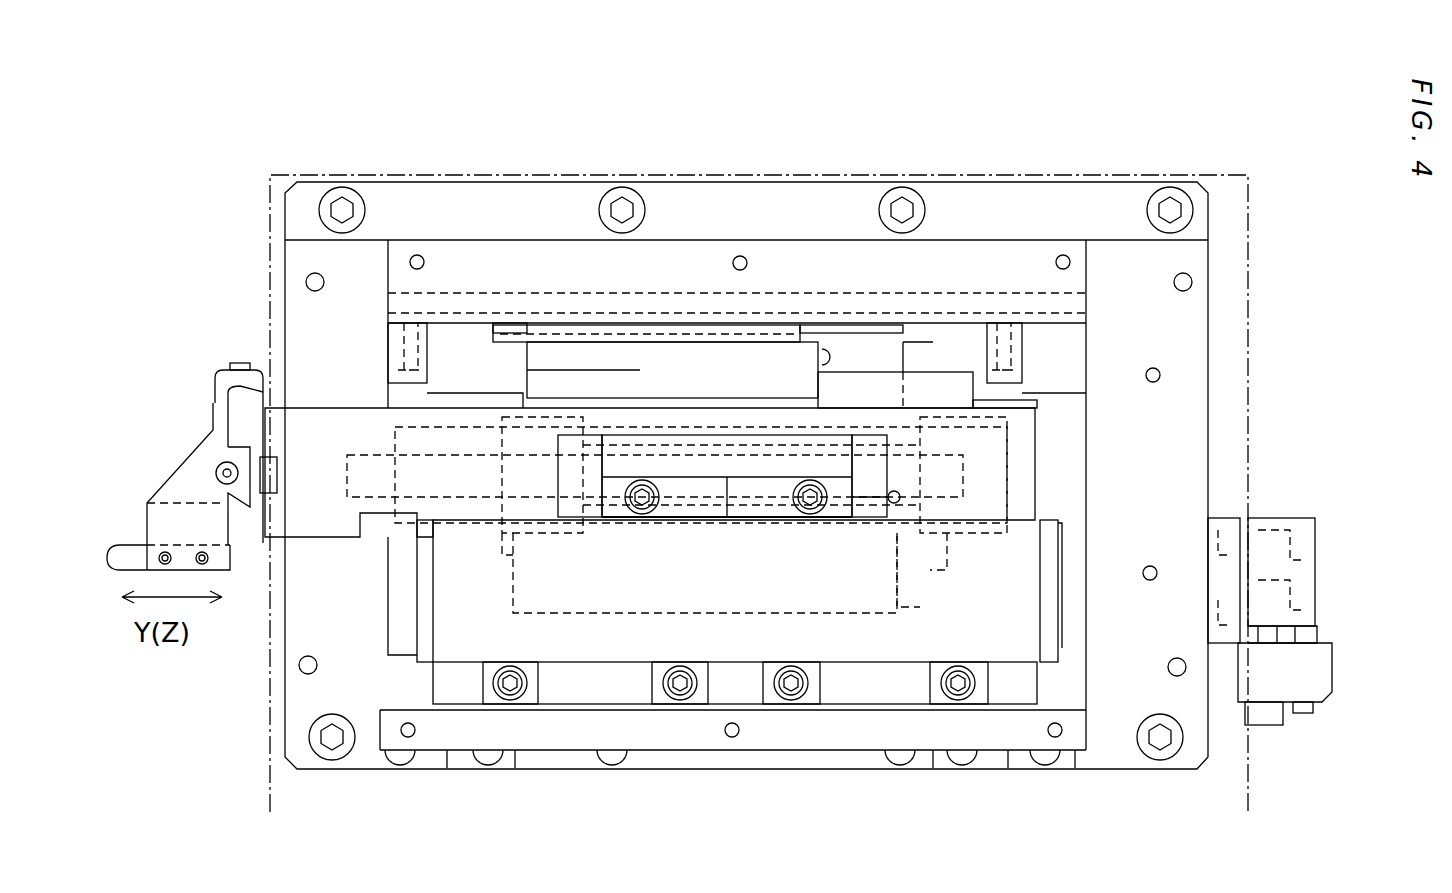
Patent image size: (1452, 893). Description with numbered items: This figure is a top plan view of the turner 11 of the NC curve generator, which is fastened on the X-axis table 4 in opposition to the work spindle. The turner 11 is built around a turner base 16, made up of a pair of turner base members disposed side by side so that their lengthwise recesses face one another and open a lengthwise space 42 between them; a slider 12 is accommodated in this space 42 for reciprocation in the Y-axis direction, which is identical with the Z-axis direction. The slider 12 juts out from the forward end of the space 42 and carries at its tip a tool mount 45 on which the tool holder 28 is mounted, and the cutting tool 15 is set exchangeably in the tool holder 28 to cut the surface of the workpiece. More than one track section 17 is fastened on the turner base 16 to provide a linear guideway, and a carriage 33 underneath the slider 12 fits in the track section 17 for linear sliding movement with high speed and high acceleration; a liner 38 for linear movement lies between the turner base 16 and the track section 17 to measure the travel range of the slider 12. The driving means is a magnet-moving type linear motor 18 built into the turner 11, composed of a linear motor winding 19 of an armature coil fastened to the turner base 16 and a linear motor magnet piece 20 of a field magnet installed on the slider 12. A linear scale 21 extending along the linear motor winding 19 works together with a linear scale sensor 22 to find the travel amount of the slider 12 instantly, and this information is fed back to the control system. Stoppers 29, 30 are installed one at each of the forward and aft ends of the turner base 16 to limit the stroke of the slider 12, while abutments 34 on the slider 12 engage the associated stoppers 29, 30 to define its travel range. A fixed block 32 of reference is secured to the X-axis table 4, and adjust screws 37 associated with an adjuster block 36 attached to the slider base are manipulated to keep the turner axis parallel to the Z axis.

The X-axis table 4 is at (1240, 413).
The turner 11 is at (1190, 358).
The slider 12 is at (318, 513).
The cutting tool 15 is at (137, 553).
The turner base 16 is at (677, 270).
The track section 17 is at (782, 375).
The linear motor 18 is at (889, 380).
The linear motor winding 19 is at (424, 635).
The linear motor magnet piece 20 is at (503, 487).
The linear scale 21 is at (778, 607).
The linear scale sensor 22 is at (723, 517).
The tool holder 28 is at (178, 508).
The stopper 29 is at (1022, 345).
The stopper 30 is at (407, 352).
The fixed block of reference 32 is at (1288, 602).
The carriage 33 is at (853, 385).
The abutments 34 is at (513, 383).
The adjuster block 36 is at (1268, 688).
The adjust screws 37 is at (1305, 713).
The liner 38 is at (751, 335).
The space 42 is at (463, 340).
The tool mount 45 is at (247, 537).